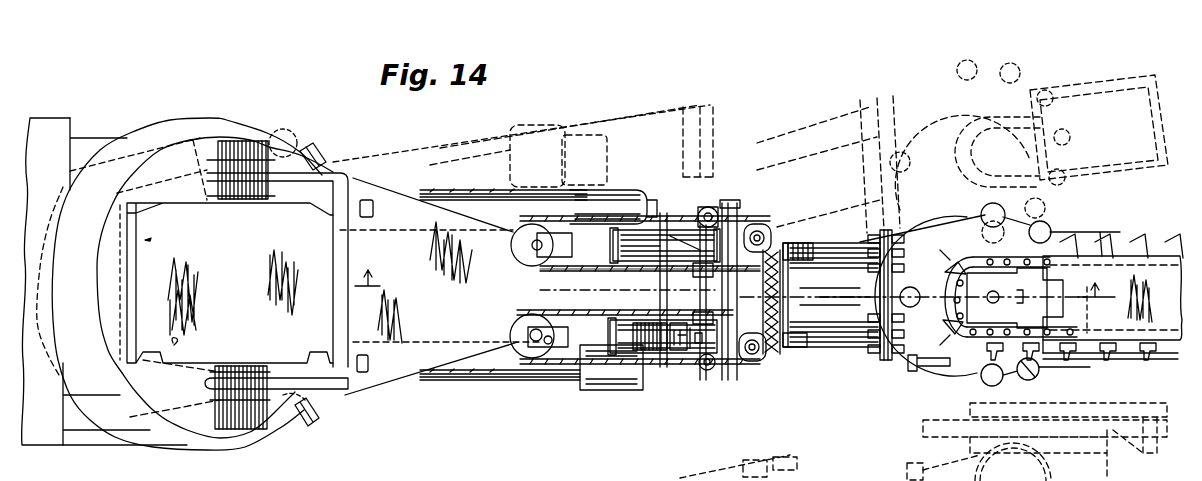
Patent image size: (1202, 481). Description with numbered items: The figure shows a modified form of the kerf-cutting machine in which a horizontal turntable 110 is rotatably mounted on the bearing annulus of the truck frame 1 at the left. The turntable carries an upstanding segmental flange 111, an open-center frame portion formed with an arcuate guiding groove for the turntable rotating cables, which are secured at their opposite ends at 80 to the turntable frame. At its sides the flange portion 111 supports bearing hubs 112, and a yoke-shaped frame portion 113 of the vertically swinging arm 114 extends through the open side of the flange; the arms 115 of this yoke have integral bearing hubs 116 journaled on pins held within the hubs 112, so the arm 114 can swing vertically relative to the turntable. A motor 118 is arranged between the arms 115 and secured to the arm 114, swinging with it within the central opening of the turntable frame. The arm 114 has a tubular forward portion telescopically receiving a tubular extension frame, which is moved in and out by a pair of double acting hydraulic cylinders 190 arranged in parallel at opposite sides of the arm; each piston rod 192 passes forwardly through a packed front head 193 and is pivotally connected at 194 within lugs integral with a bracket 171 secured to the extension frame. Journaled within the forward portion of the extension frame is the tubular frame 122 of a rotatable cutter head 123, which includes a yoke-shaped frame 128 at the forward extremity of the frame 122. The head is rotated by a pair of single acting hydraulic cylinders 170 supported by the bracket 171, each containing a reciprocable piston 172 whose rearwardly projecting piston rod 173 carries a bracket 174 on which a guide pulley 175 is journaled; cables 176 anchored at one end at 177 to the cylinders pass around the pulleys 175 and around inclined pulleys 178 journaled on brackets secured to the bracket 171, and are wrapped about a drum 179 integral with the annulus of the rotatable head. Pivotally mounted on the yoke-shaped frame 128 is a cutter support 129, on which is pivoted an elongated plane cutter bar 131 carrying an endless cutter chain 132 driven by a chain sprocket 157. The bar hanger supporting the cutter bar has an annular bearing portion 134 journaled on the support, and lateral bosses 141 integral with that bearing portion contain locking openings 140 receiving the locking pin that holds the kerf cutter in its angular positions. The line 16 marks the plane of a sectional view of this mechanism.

The frame bracket 1 is at (55, 131).
The horizontal turntable 110 is at (143, 130).
The upstanding segmental flange 111 is at (180, 130).
The bearing hubs 112 is at (235, 150).
The yoke-shaped frame portion 113 is at (333, 170).
The arms 115 is at (278, 173).
The bearing hubs 116 is at (253, 200).
The cable securing point 80 is at (307, 157).
The motor 118 is at (173, 343).
The vertically swinging arm 114 is at (430, 357).
The double acting hydraulic cylinders 190 is at (440, 197).
The guide pulley 175 is at (520, 233).
The bracket 174 is at (550, 237).
The cables 176 is at (570, 230).
The piston rod 173 is at (593, 237).
The single acting hydraulic cylinders 170 is at (667, 228).
The cable anchorage 177 is at (680, 294).
The pivotal connection 194 is at (708, 210).
The inclined pulleys 178 is at (763, 362).
The drum 179 is at (780, 352).
The tubular frame 122 is at (843, 333).
The rotatable cutter head 123 is at (883, 360).
The yoke-shaped frame 128 is at (914, 368).
The lateral bosses 141 is at (981, 385).
The locking openings 140 is at (995, 203).
The chain sprocket 157 is at (1010, 278).
The endless cutter chain 132 is at (1127, 255).
The elongated plane cutter bar 131 is at (1167, 257).
The annular bearing portion 134 is at (1034, 372).
The cutter support 129 is at (1043, 357).
The section line 16 is at (735, 291).
The piston rod 192 is at (665, 370).
The packed front head 193 is at (640, 358).
The reciprocable piston 172 is at (673, 378).
The bracket 171 is at (701, 367).